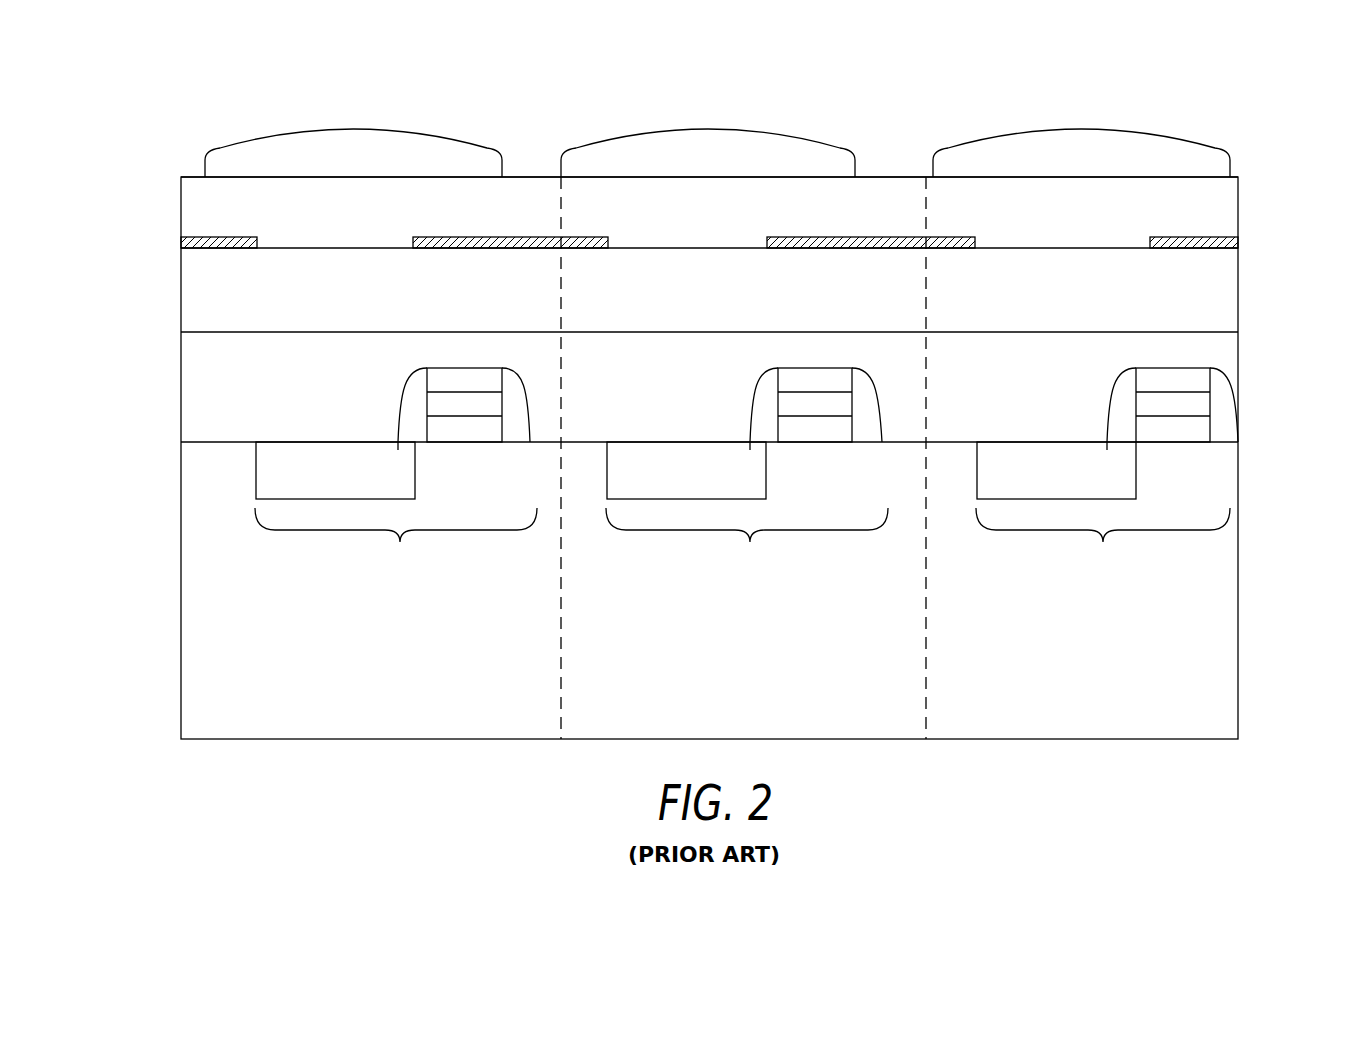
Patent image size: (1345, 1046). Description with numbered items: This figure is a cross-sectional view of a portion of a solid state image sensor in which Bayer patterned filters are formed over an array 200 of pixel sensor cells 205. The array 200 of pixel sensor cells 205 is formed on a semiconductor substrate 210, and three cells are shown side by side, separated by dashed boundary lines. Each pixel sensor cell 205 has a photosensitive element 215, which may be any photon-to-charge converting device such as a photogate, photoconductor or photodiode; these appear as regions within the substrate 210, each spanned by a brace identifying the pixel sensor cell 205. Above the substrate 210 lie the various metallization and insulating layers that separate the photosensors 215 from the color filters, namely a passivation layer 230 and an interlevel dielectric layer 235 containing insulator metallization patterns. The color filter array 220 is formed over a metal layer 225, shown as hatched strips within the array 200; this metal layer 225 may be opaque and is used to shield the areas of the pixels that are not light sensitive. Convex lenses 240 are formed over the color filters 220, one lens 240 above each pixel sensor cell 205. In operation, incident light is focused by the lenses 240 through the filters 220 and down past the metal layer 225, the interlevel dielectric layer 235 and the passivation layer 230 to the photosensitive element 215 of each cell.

The array 200 is at (177, 94).
The pixel sensor cell 205 is at (742, 542).
The semiconductor substrate 210 is at (1114, 681).
The photosensitive element 215 is at (347, 482).
The color filter array 220 is at (345, 234).
The metal layer 225 is at (172, 242).
The passivation layer 230 is at (272, 391).
The interlevel dielectric layer 235 is at (264, 309).
The convex lens 240 is at (591, 147).